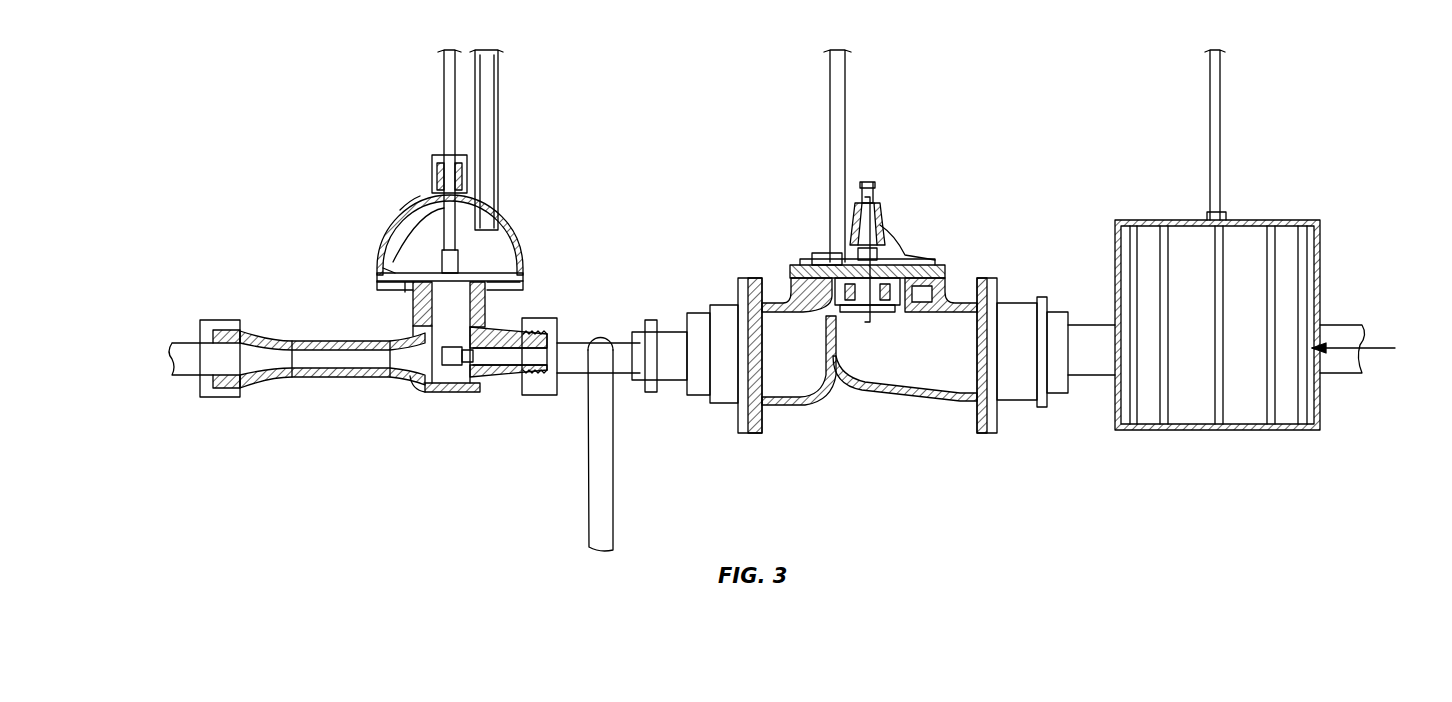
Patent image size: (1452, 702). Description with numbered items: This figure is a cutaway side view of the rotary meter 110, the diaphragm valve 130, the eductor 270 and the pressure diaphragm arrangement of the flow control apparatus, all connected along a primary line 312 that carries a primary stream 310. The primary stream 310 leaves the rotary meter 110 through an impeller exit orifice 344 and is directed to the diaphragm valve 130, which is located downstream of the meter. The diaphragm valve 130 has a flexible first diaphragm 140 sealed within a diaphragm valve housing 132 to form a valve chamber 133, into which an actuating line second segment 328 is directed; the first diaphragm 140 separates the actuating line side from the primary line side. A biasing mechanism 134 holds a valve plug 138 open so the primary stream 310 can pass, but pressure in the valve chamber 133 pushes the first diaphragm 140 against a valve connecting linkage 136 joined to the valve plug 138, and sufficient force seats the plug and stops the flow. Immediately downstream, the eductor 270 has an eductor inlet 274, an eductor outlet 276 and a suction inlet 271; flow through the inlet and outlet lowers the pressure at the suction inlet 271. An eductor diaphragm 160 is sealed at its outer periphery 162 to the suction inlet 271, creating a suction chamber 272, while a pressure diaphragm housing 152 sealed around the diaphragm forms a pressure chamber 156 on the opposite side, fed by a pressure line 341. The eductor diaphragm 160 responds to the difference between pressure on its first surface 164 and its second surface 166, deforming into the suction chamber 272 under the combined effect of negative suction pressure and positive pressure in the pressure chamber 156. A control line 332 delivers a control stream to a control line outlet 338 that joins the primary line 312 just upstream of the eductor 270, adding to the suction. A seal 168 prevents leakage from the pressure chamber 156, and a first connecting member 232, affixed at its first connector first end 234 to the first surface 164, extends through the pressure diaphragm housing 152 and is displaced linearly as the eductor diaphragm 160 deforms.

The rotary meter 110 is at (1298, 222).
The diaphragm valve 130 is at (805, 165).
The diaphragm valve housing 132 is at (962, 268).
The valve chamber 133 is at (905, 262).
The biasing mechanism 134 is at (882, 205).
The valve connecting linkage 136 is at (895, 248).
The valve plug 138 is at (812, 266).
The first diaphragm 140 is at (826, 258).
The pressure diaphragm housing 152 is at (508, 210).
The pressure chamber 156 is at (402, 262).
The eductor diaphragm 160 is at (403, 288).
The outer periphery 162 is at (522, 290).
The first surface 164 is at (510, 268).
The second surface 166 is at (520, 286).
The seal 168 is at (432, 160).
The first connecting member 232 is at (442, 95).
The first connector first end 234 is at (432, 252).
The eductor 270 is at (292, 300).
The suction inlet 271 is at (365, 372).
The suction chamber 272 is at (450, 340).
The eductor inlet 274 is at (478, 390).
The eductor outlet 276 is at (215, 375).
The primary stream 310 is at (1378, 348).
The primary line 312 is at (1340, 325).
The actuating line second segment 328 is at (847, 108).
The control line 332 is at (612, 490).
The control line outlet 338 is at (605, 357).
The pressure line 341 is at (499, 160).
The impeller exit orifice 344 is at (1110, 345).